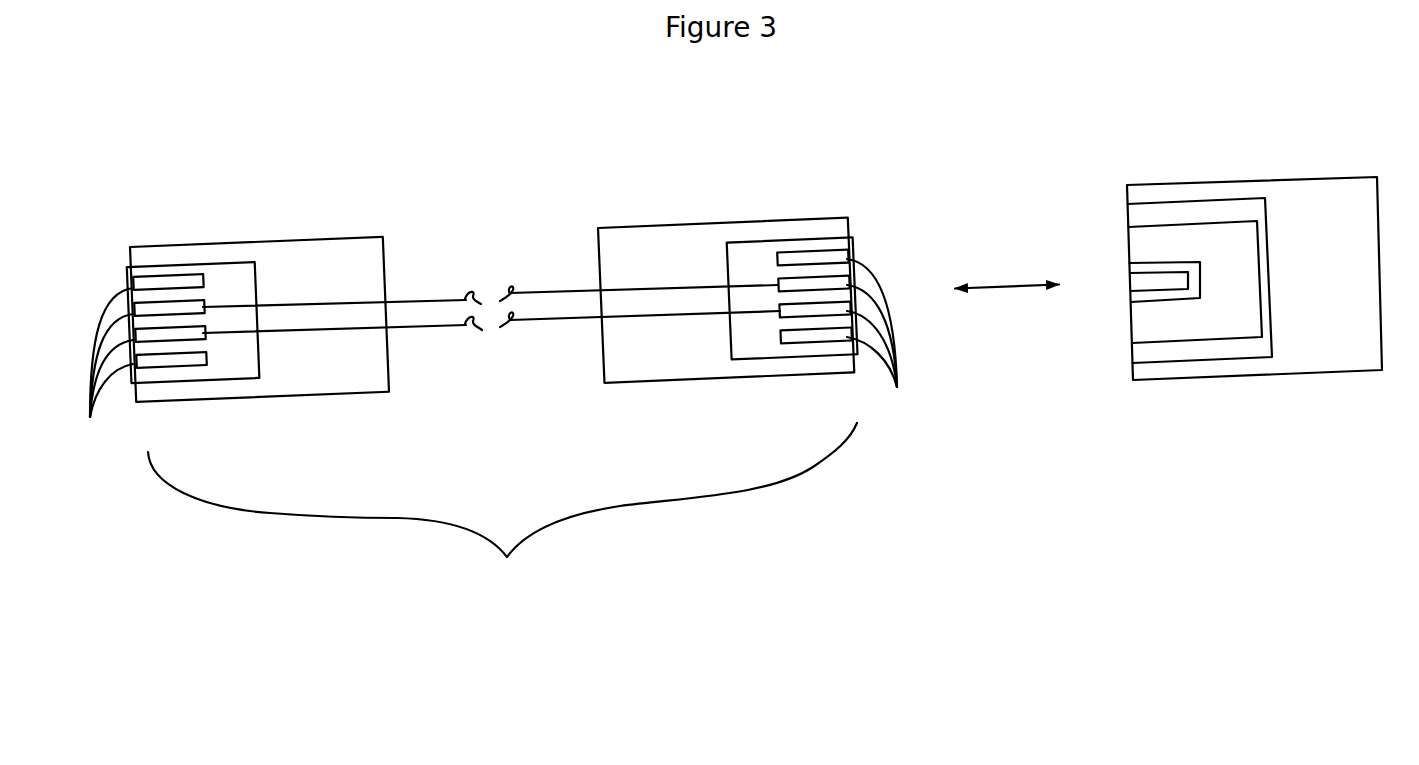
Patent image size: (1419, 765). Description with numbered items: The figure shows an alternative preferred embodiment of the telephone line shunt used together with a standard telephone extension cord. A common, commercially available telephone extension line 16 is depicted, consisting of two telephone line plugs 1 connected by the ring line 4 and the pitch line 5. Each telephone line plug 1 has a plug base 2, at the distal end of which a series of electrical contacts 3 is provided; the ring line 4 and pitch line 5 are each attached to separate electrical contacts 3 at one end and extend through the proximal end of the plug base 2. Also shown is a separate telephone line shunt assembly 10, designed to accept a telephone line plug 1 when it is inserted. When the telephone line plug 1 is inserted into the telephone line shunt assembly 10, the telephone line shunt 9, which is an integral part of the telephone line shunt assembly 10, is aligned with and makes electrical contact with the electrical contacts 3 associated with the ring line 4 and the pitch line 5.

The telephone line plug 1 is at (126, 224).
The plug base 2 is at (333, 250).
The electrical contacts 3 is at (492, 354).
The ring line 4 is at (405, 300).
The pitch line 5 is at (407, 327).
The telephone line shunt 9 is at (1190, 278).
The telephone line shunt assembly 10 is at (1320, 188).
The telephone extension line 16 is at (502, 513).